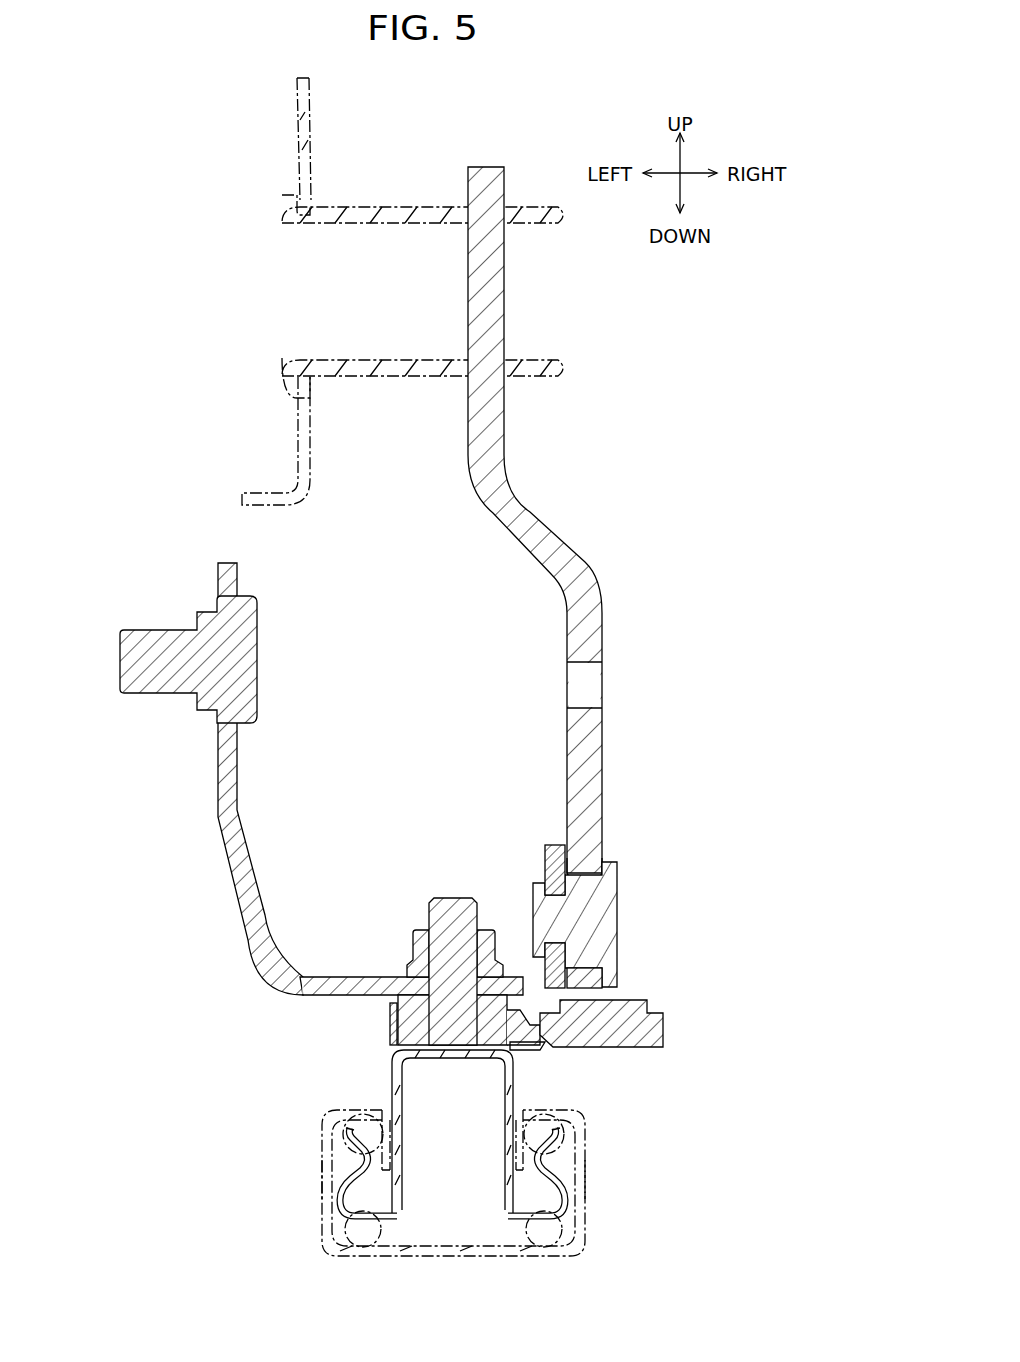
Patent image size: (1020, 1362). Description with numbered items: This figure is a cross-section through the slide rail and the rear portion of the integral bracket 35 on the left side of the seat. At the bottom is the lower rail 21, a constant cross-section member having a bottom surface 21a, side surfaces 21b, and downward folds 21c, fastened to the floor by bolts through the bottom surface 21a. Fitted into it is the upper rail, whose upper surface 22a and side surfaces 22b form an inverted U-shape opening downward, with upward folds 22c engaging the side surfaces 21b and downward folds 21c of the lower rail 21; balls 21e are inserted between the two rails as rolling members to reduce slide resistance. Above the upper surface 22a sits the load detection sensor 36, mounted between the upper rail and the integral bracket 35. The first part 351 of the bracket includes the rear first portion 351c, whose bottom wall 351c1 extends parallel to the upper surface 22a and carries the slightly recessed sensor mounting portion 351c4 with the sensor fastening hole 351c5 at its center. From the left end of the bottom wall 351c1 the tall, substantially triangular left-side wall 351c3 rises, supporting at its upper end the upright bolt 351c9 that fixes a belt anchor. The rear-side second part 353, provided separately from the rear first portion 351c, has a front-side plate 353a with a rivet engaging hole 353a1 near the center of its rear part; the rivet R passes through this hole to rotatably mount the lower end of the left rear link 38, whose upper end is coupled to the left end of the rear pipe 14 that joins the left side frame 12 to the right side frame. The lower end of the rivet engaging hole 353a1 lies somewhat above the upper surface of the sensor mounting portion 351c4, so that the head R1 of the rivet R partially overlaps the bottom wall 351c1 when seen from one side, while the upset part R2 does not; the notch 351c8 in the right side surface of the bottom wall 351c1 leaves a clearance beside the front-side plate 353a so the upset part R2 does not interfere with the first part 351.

The left side frame 12 is at (308, 118).
The rear pipe 14 is at (525, 198).
The left rear link 38 is at (565, 545).
The integral bracket 35 is at (186, 967).
The left-side wall 351c3 is at (218, 817).
The sensor mounting portion 351c4 is at (360, 975).
The bottom wall 351c1 is at (390, 894).
The rear first portion 351c is at (390, 894).
The first part 351 is at (390, 894).
The bolt 351c9 is at (150, 630).
The sensor fastening hole 351c5 is at (415, 951).
The notch 351c8 is at (530, 975).
The rear-side second part 353 is at (613, 862).
The front-side plate 353a is at (613, 862).
The rivet engaging hole 353a1 is at (620, 905).
The rivet R is at (620, 940).
The head R1 is at (608, 868).
The upset part R2 is at (540, 895).
The load detection sensor 36 is at (665, 1030).
The upper surface 22a is at (395, 1044).
The side surfaces 22b is at (392, 1088).
The upward folds 22c is at (340, 1212).
The lower rail 21 is at (598, 1200).
The bottom surface 21a is at (432, 1258).
The side surfaces 21b is at (322, 1172).
The downward folds 21c is at (348, 1110).
The balls 21e is at (345, 1137).